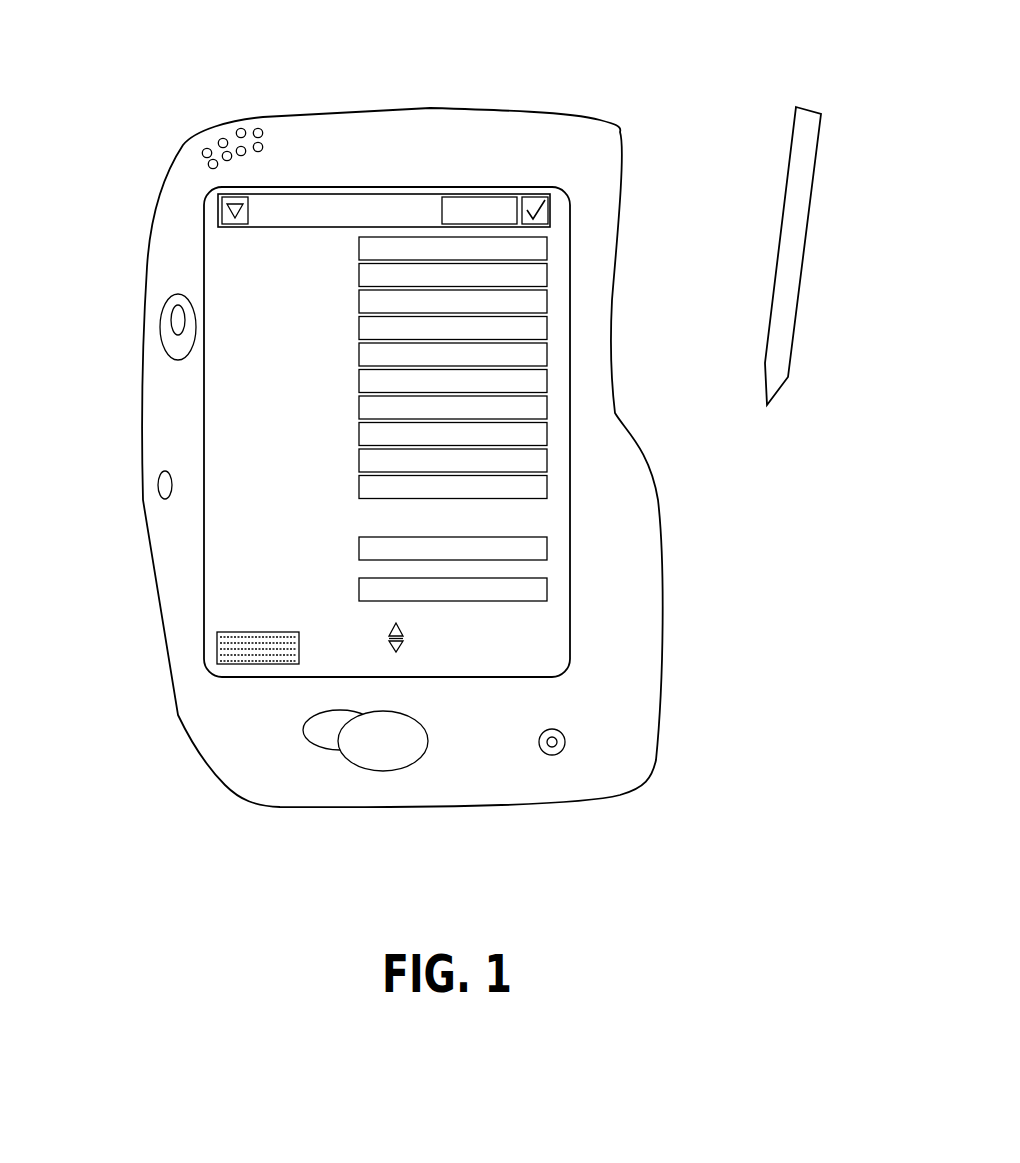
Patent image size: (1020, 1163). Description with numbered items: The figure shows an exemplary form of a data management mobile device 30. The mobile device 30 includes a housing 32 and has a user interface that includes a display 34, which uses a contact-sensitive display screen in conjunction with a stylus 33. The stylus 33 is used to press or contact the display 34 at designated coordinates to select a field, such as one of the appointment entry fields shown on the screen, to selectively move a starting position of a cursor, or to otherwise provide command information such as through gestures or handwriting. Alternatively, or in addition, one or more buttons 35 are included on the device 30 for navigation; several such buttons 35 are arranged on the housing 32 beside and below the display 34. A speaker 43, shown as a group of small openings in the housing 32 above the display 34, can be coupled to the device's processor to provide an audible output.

The mobile device 30 is at (138, 58).
The housing 32 is at (428, 110).
The stylus 33 is at (802, 280).
The display 34 is at (517, 483).
The buttons 35 is at (172, 320).
The speaker 43 is at (240, 128).